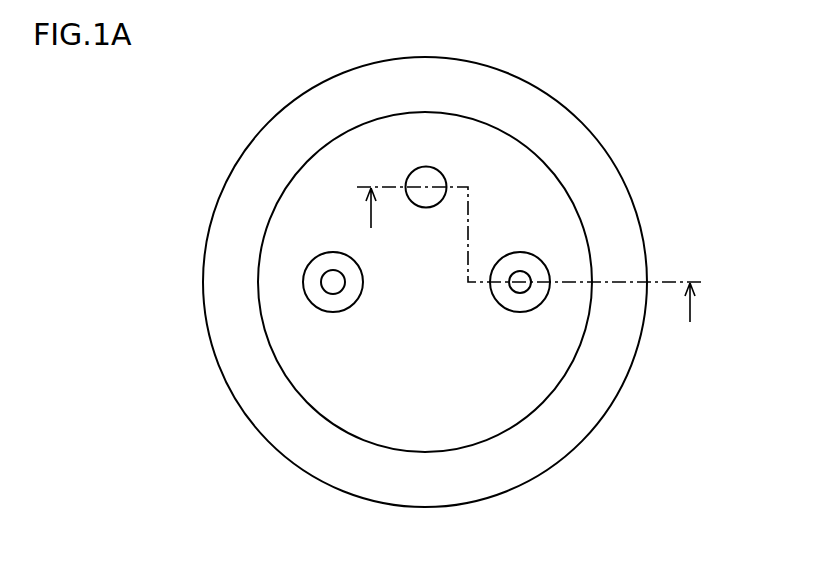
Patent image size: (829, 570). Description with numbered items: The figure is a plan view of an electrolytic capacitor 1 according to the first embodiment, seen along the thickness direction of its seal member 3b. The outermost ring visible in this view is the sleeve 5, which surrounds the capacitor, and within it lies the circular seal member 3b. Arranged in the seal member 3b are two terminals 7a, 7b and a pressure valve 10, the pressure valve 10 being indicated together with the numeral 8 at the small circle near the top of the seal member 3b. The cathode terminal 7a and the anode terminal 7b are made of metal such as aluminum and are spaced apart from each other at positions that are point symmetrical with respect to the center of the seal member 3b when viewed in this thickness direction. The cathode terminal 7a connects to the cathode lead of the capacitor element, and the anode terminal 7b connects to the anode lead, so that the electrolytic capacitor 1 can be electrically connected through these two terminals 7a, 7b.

The electrolytic capacitor 1 is at (673, 87).
The sleeve 5 is at (248, 383).
The seal member 3b is at (445, 350).
The pressure valve 10 is at (423, 178).
The refrigerant flow hole 8 is at (426, 187).
The cathode terminal 7a is at (333, 312).
The anode terminal 7b is at (520, 312).